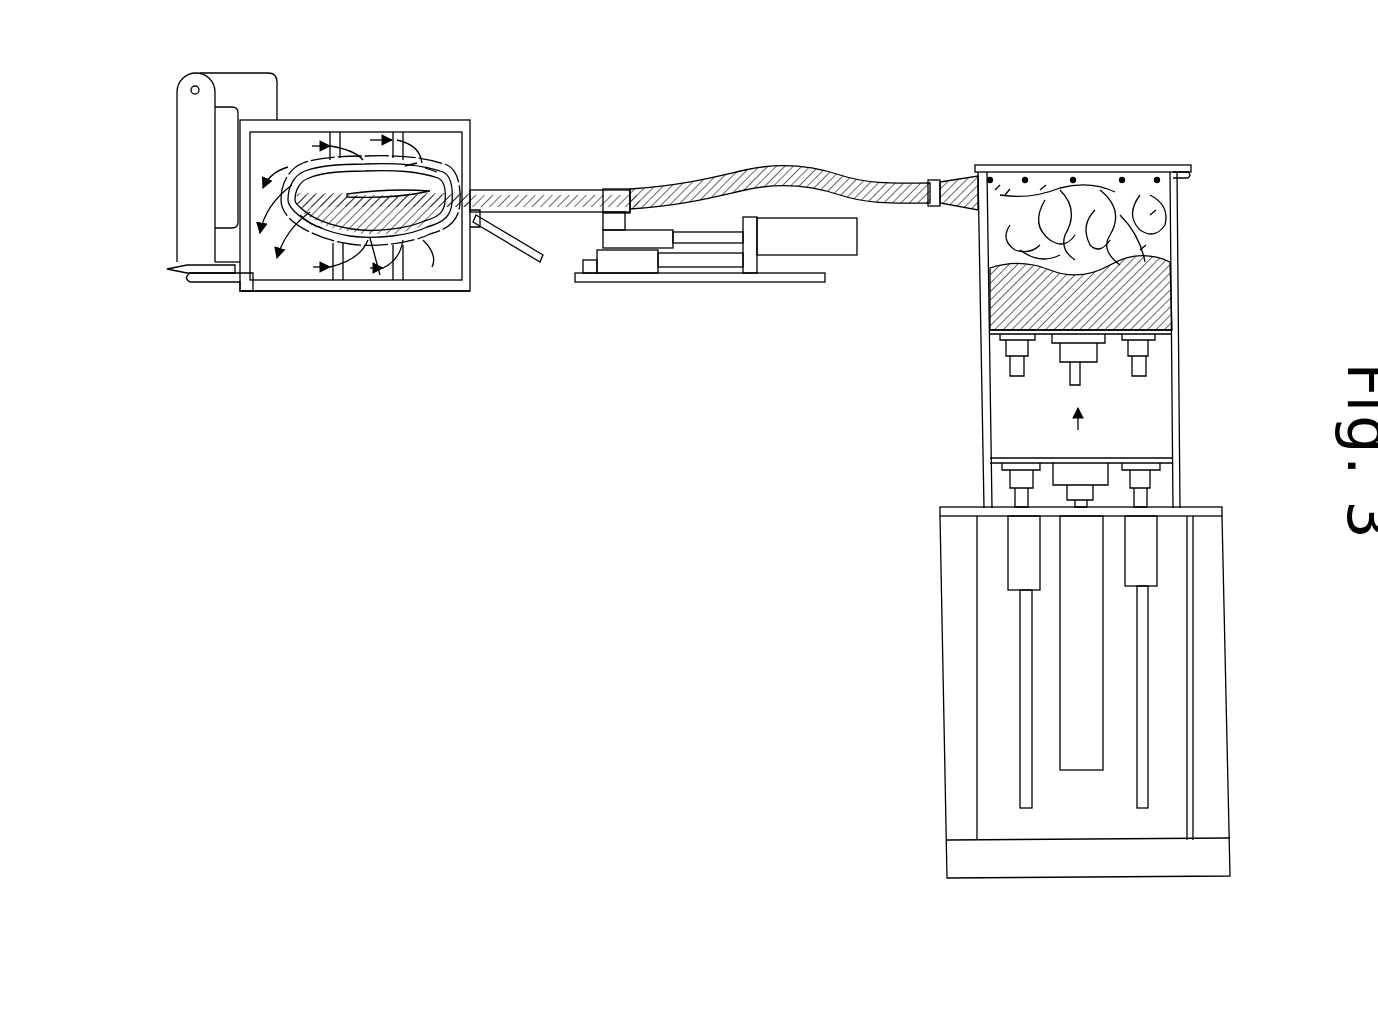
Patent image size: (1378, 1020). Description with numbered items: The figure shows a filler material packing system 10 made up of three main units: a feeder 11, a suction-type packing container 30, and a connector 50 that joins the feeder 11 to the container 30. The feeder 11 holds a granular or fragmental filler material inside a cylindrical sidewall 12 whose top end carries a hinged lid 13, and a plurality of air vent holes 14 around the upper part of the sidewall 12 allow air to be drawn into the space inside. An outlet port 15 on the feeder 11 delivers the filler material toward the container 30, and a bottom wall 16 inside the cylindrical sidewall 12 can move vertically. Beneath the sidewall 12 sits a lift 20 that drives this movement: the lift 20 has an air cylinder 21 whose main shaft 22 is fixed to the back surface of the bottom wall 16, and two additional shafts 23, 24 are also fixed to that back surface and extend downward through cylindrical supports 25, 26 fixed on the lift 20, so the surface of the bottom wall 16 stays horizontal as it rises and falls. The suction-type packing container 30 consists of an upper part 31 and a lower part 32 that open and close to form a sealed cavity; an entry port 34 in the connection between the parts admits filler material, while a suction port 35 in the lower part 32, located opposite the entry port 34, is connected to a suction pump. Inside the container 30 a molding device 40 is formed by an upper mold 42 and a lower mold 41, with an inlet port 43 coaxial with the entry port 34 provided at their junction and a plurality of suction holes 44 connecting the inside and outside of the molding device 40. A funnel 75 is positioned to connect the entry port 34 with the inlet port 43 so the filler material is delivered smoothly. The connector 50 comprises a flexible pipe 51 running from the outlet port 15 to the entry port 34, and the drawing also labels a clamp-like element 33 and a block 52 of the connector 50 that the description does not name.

The filler material packing system 10 is at (625, 525).
The feeder 11 is at (1036, 340).
The cylindrical sidewall 12 is at (1178, 250).
The lid 13 is at (1087, 167).
The air vent holes 14 is at (1137, 168).
The outlet port 15 is at (957, 208).
The bottom wall 16 is at (1117, 458).
The lift 20 is at (1065, 690).
The air cylinder 21 is at (1093, 617).
The main shaft 22 is at (1090, 503).
The additional shaft 23 is at (1017, 497).
The additional shaft 24 is at (1150, 495).
The cylindrical support 25 is at (1015, 548).
The cylindrical support 26 is at (1148, 560).
The suction-type packing container 30 is at (332, 228).
The upper part 31 is at (302, 124).
The lower part 32 is at (444, 288).
The clamp 33 is at (185, 112).
The entry port 34 is at (440, 213).
The suction port 35 is at (233, 282).
The molding device 40 is at (368, 138).
The lower mold 41 is at (313, 228).
The upper mold 42 is at (417, 163).
The inlet port 43 is at (433, 163).
The suction holes 44 is at (377, 273).
The connector 50 is at (716, 298).
The flexible pipe 51 is at (683, 192).
The actuator block 52 is at (622, 263).
The funnel 75 is at (475, 182).